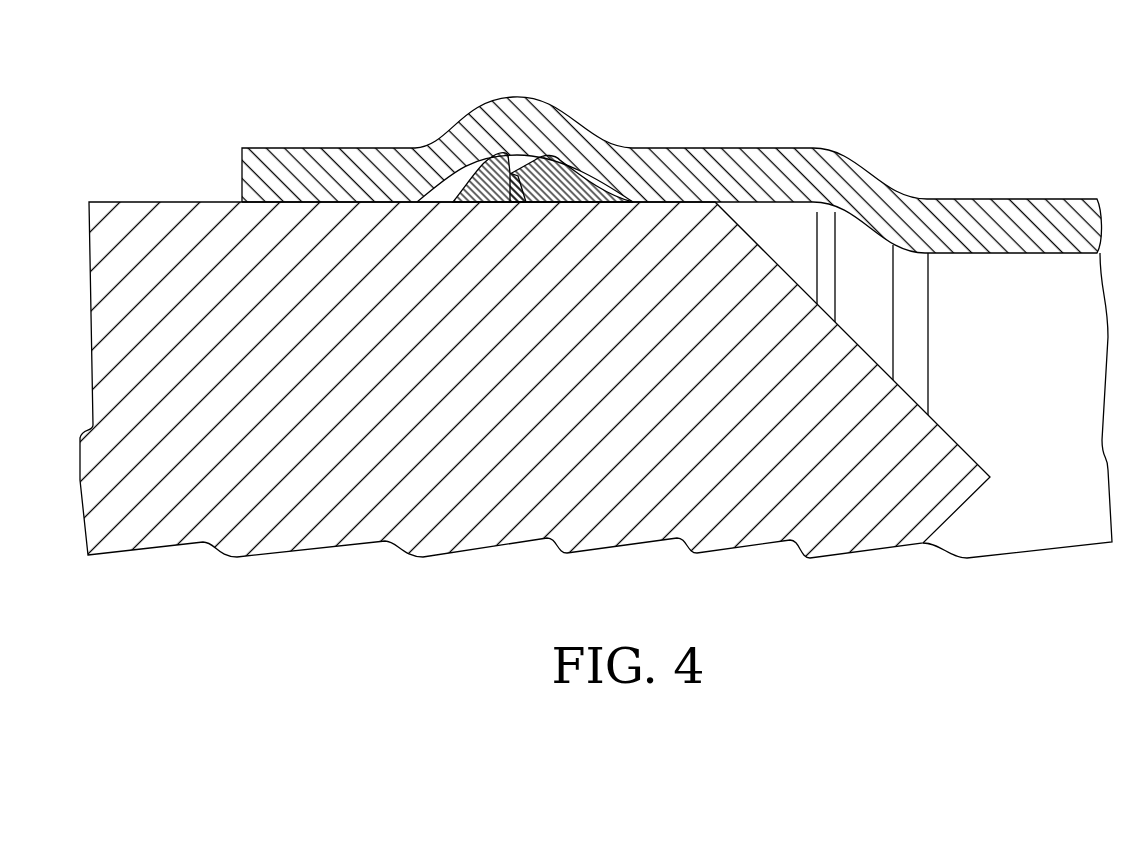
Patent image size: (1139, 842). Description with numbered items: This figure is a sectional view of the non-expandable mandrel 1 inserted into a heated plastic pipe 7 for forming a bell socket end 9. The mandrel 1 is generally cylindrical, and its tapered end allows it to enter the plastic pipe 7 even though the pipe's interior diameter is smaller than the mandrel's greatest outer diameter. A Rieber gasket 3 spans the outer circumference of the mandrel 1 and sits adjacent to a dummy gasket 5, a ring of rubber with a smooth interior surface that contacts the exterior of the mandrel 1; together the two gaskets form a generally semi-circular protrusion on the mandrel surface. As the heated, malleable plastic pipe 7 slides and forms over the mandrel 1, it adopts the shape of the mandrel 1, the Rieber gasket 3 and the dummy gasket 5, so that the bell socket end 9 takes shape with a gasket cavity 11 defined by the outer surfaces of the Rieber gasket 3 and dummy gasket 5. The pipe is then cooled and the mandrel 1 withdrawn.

The mandrel 1 is at (148, 200).
The Rieber gasket 3 is at (559, 168).
The dummy gasket 5 is at (481, 168).
The plastic pipe 7 is at (1001, 197).
The bell socket end 9 is at (683, 146).
The gasket cavity 11 is at (518, 95).